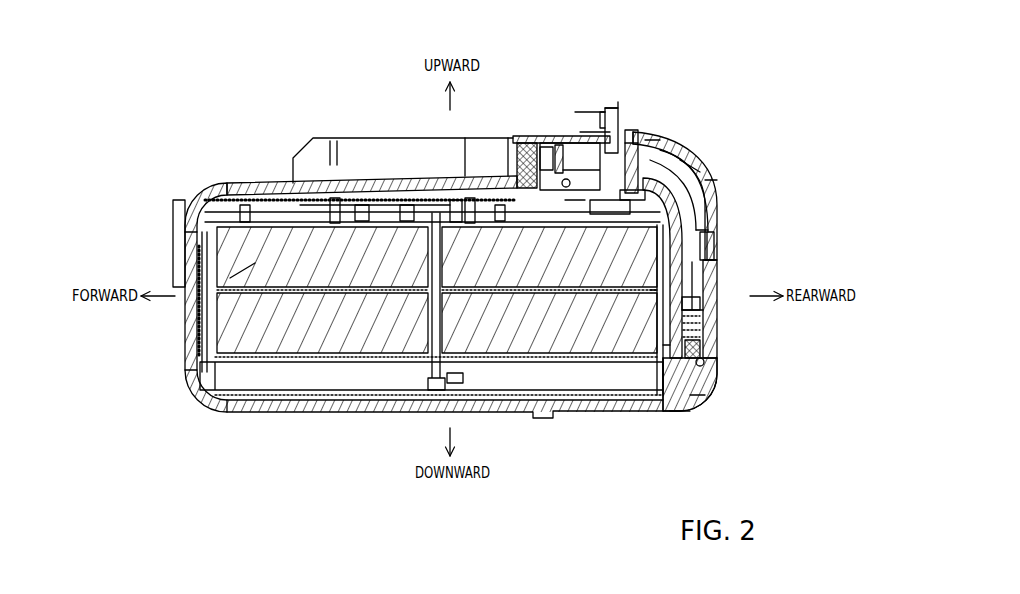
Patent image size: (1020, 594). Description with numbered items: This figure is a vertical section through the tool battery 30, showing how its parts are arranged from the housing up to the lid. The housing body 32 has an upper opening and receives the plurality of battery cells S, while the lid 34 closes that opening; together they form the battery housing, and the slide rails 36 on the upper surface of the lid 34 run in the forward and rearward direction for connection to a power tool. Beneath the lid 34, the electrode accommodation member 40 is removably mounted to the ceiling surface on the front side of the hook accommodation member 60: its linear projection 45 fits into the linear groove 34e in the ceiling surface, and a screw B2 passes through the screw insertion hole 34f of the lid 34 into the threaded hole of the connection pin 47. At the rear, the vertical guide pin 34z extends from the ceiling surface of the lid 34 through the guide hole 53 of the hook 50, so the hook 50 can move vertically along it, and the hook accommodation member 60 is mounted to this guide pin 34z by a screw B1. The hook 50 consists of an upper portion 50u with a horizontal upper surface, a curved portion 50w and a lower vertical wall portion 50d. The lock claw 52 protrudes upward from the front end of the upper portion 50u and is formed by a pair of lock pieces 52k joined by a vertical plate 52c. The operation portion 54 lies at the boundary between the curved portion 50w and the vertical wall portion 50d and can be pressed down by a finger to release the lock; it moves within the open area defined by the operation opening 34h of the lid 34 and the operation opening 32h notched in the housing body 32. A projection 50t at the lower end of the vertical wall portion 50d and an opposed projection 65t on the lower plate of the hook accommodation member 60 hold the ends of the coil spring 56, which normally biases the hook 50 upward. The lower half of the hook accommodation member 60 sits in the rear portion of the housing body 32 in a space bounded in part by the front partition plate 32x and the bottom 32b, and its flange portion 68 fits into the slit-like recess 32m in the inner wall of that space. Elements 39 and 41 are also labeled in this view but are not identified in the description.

The tool battery 30 is at (578, 108).
The housing body 32 is at (353, 413).
The bottom of the accommodation space 32b is at (682, 411).
The operation opening 32h is at (712, 242).
The slit-like recess 32m is at (705, 385).
The front partition plate 32x is at (668, 340).
The lid 34 is at (240, 178).
The linear groove 34e is at (457, 186).
The screw insertion hole 34f is at (528, 142).
The operation opening of the lid 34h is at (698, 165).
The vertical guide pin 34z is at (572, 263).
The slide rails 36 is at (380, 160).
The seal 39 is at (600, 132).
The electrode accommodation member 40 is at (535, 200).
The rear battery module 41 is at (582, 195).
The linear projection 45 is at (455, 177).
The connection pin 47 is at (513, 160).
The hook 50 is at (703, 170).
The lower vertical wall portion 50d is at (700, 268).
The projection 50t is at (700, 305).
The upper portion 50u is at (640, 147).
The curved portion 50w is at (717, 187).
The lock claw 52 is at (623, 108).
The vertical plate 52c is at (620, 122).
The lock pieces 52k is at (615, 116).
The guide hole 53 is at (657, 140).
The operation portion 54 is at (716, 212).
The coil spring 56 is at (692, 336).
The hook accommodation member 60 is at (650, 290).
The projection 65t is at (703, 395).
The flange portion 68 is at (710, 364).
The screw B1 is at (638, 200).
The screw B2 is at (523, 148).
The battery cells S is at (185, 317).